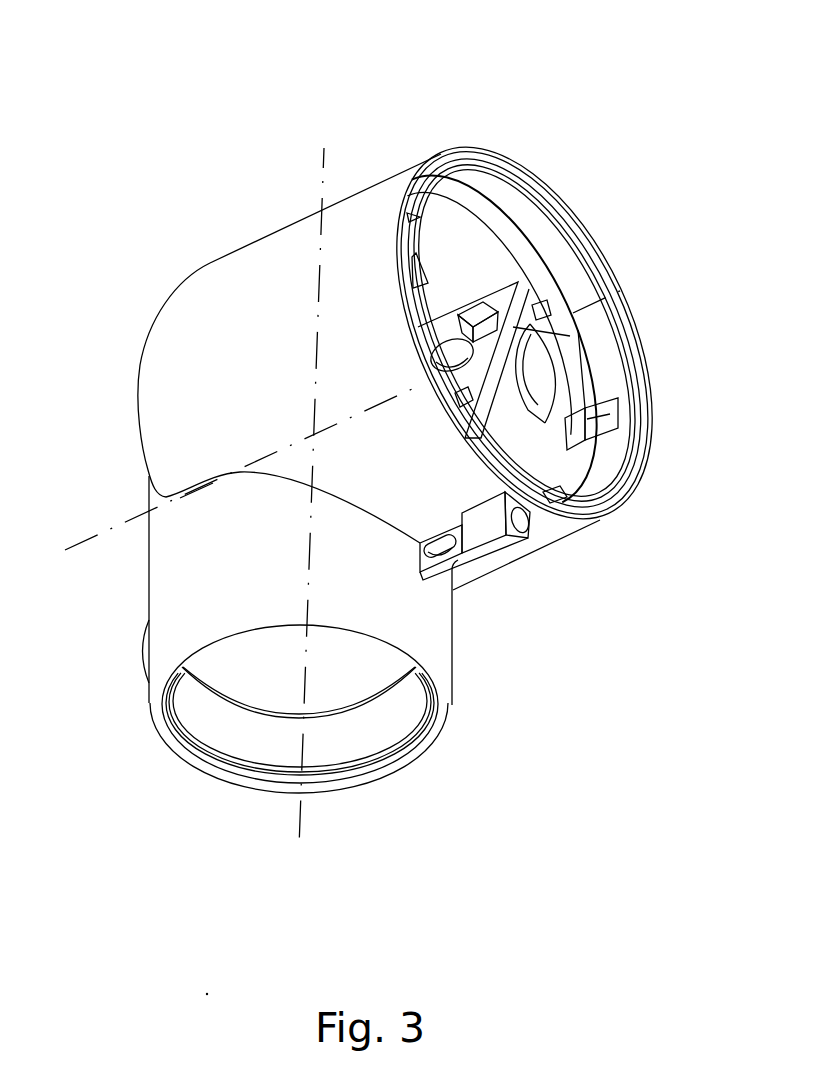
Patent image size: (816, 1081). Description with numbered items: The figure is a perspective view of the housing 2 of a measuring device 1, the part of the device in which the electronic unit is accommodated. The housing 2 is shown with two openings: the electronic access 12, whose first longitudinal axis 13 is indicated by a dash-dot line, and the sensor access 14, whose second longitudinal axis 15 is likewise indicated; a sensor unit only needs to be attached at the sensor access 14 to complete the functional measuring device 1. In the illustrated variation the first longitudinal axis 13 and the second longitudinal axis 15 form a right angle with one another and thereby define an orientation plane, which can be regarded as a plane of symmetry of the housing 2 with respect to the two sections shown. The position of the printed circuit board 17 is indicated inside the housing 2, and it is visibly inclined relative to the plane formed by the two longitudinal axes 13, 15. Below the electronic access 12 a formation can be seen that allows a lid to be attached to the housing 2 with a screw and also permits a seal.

The measuring device 1 is at (168, 178).
The housing 2 is at (545, 523).
The electronic access 12 is at (530, 220).
The first longitudinal axis 13 is at (655, 275).
The sensor access 14 is at (359, 745).
The second longitudinal axis 15 is at (299, 840).
The printed circuit board 17 is at (487, 400).